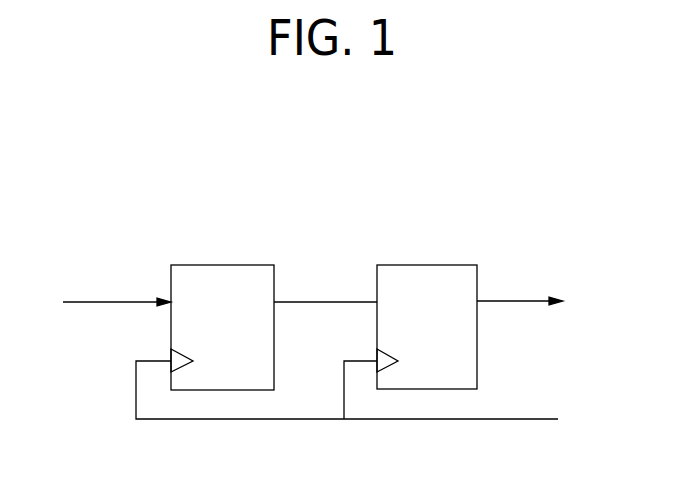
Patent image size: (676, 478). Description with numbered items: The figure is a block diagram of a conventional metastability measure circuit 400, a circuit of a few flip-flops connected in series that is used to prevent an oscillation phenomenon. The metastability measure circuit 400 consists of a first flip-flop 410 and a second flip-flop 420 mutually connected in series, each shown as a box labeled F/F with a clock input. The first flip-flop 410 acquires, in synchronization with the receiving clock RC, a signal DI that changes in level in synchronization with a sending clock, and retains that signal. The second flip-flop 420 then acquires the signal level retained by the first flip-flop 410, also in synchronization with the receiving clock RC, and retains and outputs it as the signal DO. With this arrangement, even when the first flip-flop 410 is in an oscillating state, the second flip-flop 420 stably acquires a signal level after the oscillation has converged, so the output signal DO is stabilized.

The metastability measure circuit 400 is at (388, 155).
The first flip-flop 410 is at (223, 265).
The second flip-flop 420 is at (430, 265).